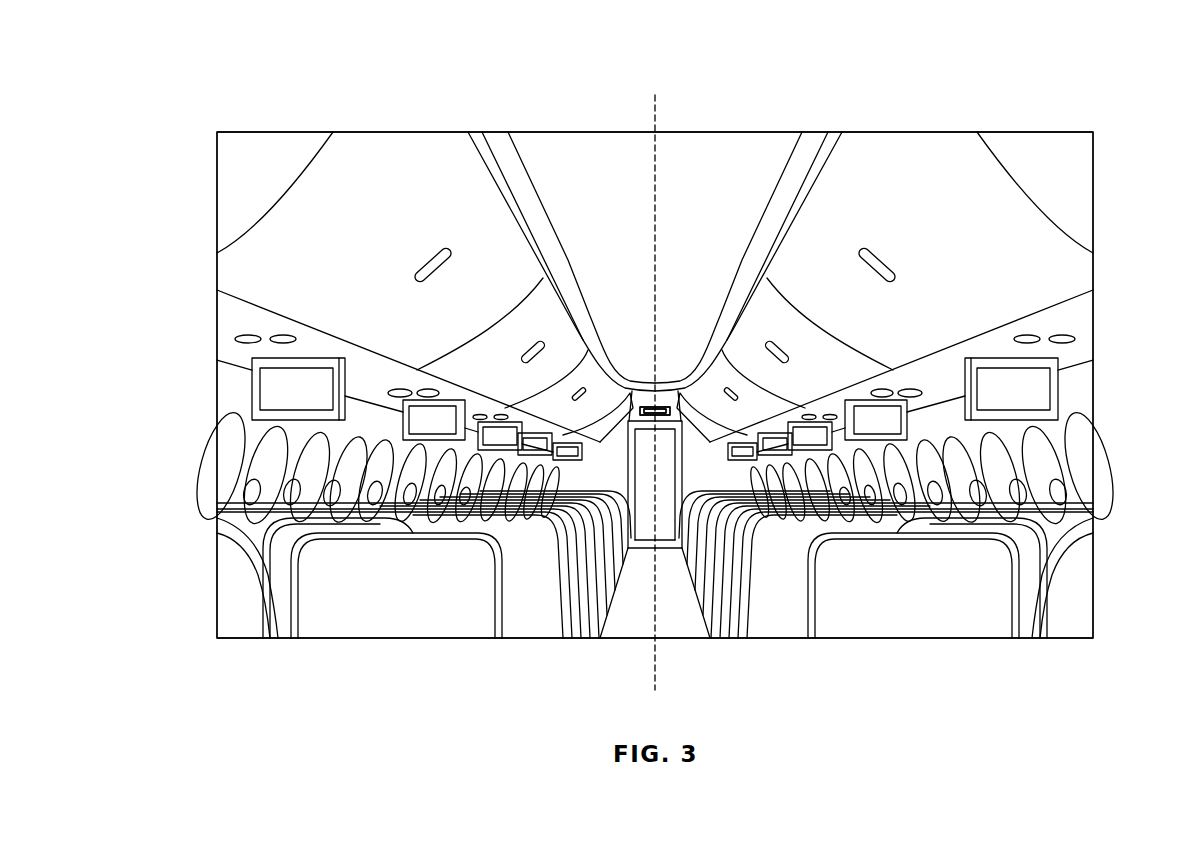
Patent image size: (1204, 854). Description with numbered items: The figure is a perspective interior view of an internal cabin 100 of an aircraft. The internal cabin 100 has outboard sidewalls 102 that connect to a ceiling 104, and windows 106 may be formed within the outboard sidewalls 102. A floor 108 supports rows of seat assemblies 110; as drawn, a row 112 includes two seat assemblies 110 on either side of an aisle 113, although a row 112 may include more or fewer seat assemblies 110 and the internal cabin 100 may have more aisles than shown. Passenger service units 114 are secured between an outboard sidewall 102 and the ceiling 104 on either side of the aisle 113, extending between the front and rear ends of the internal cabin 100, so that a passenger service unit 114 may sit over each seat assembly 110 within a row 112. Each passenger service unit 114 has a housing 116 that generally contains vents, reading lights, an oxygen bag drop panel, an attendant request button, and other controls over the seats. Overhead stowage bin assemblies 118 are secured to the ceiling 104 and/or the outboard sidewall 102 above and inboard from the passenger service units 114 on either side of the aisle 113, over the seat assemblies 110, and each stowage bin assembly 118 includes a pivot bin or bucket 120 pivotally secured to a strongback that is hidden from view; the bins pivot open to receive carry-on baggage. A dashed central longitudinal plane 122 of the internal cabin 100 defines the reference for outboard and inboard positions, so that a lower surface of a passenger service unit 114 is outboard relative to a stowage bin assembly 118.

The internal cabin 100 is at (157, 84).
The outboard sidewalls 102 is at (229, 392).
The ceiling 104 is at (716, 130).
The windows 106 is at (250, 497).
The floor 108 is at (642, 618).
The seat assemblies 110 is at (392, 627).
The row 112 is at (226, 595).
The aisle 113 is at (678, 618).
The passenger service units 114 is at (247, 345).
The housing 116 is at (218, 330).
The overhead stowage bin assemblies 118 is at (328, 186).
The pivot bin or bucket 120 is at (396, 150).
The central longitudinal plane 122 is at (652, 98).